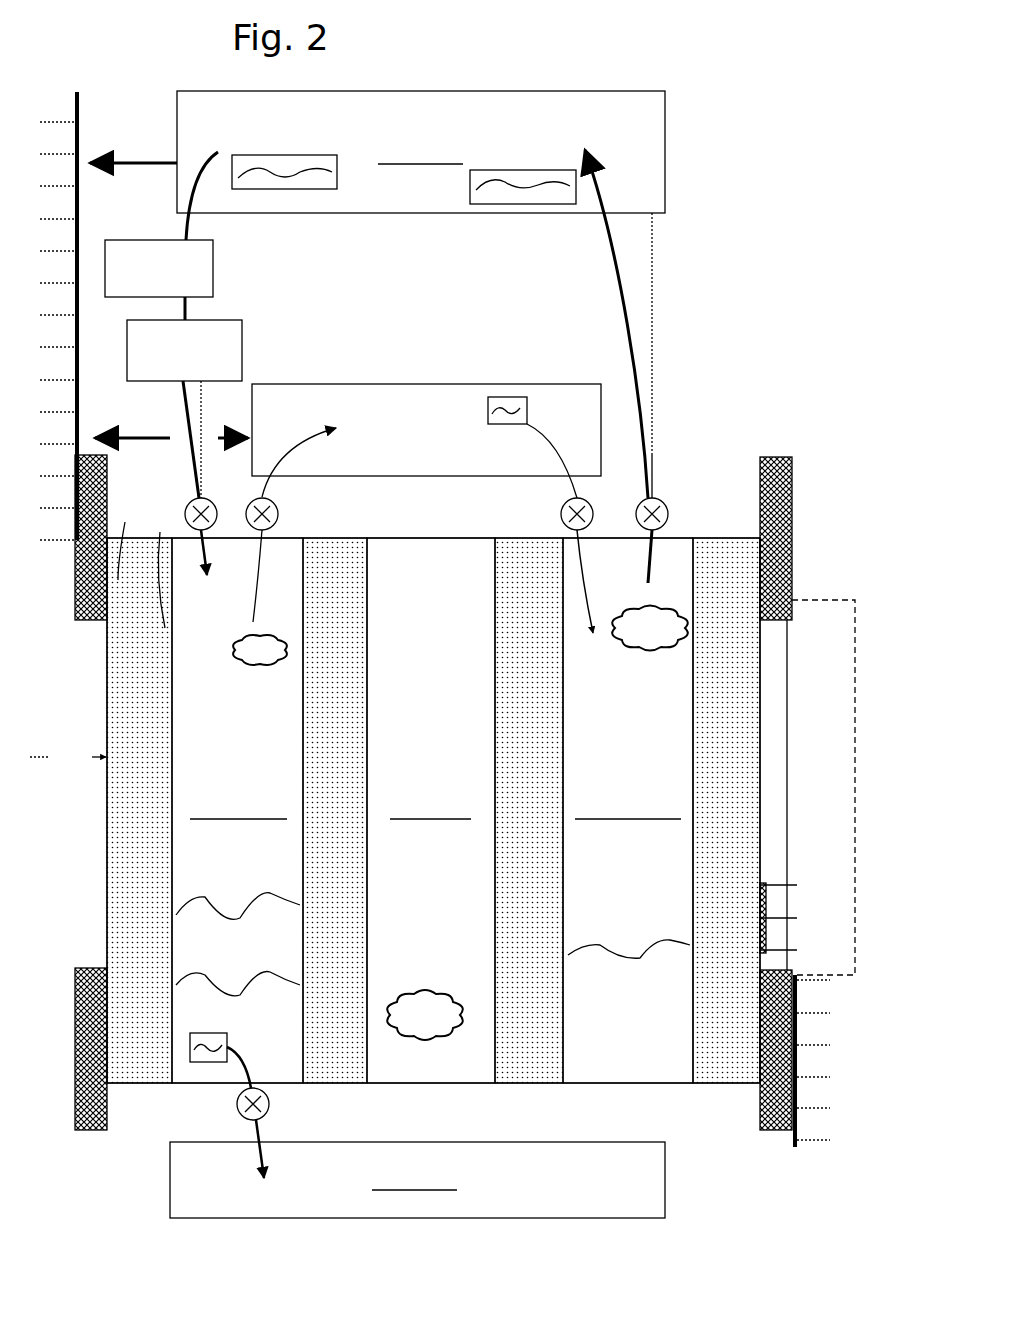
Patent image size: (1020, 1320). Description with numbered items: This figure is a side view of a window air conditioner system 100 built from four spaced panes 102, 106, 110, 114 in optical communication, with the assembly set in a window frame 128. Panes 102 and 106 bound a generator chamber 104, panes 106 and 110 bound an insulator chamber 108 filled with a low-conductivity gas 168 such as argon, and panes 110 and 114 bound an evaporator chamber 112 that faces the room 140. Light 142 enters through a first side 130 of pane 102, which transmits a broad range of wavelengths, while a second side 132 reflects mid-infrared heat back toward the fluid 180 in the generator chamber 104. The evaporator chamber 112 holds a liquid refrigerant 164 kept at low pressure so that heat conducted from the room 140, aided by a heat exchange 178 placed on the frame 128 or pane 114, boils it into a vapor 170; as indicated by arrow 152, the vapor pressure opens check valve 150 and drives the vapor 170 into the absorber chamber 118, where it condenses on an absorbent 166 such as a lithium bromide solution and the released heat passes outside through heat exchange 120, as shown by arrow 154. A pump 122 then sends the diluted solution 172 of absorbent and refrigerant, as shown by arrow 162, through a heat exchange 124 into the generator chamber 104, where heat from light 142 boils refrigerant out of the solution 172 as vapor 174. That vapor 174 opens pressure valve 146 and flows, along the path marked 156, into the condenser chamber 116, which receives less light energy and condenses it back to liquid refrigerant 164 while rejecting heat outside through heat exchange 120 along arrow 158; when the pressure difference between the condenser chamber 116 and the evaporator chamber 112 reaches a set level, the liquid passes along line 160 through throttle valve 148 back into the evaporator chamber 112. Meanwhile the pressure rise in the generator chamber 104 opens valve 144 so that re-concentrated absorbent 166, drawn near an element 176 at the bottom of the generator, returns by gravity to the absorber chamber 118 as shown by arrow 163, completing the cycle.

The window air conditioner system 100 is at (590, 42).
The pane 102 is at (150, 1085).
The generator chamber 104 is at (225, 1085).
The pane 106 is at (345, 1085).
The insulator chamber 108 is at (420, 1085).
The pane 110 is at (520, 1085).
The evaporator chamber 112 is at (600, 1085).
The pane 114 is at (710, 1085).
The condenser chamber 116 is at (392, 381).
The absorber chamber 118 is at (665, 152).
The heat exchange 120 is at (88, 105).
The pump 122 is at (117, 240).
The heat exchange 124 is at (242, 345).
The window frame 128 is at (768, 457).
The first side 130 is at (124, 535).
The second side 132 is at (161, 565).
The room 140 is at (845, 762).
The light 142 is at (68, 745).
The valve 144 is at (217, 512).
The valve 146 is at (278, 512).
The throttle valve 148 is at (592, 510).
The valve 150 is at (668, 505).
The arrow 152 is at (648, 322).
The arrow 154 is at (130, 155).
The flow to condenser 156 is at (305, 440).
The arrow 158 is at (168, 432).
The condensate line 160 is at (555, 445).
The arrow 162 is at (215, 152).
The arrow 163 is at (254, 1065).
The refrigerant 164 is at (508, 397).
The absorbent 166 is at (518, 172).
The gas 168 is at (436, 994).
The vapor 170 is at (642, 655).
The solution 172 is at (296, 155).
The vapor 174 is at (266, 668).
The solution 176 is at (228, 1040).
The heat exchange 178 is at (770, 880).
The fluid 180 is at (240, 982).